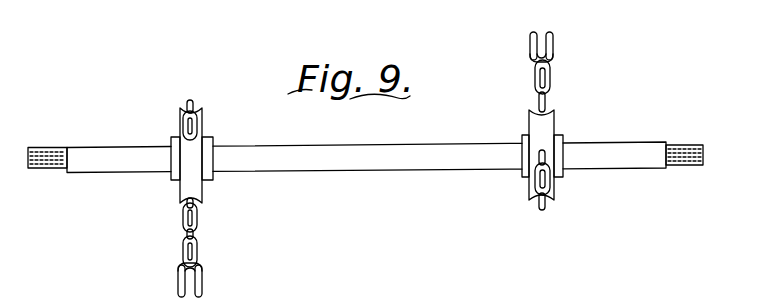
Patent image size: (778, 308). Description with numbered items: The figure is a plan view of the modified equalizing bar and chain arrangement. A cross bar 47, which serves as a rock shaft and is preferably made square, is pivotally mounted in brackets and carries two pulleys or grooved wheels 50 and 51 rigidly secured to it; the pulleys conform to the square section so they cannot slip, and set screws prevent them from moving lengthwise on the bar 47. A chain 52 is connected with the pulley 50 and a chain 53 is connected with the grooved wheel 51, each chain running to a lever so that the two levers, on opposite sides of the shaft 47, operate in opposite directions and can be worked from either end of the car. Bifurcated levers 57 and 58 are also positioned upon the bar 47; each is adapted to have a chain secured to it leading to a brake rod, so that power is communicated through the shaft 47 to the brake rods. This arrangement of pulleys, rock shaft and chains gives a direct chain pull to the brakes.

The cross bar 47 is at (292, 163).
The pulley or grooved wheel 50 is at (205, 193).
The pulley or grooved wheel 51 is at (560, 190).
The chain 52 is at (187, 245).
The chain 53 is at (552, 78).
The bifurcated lever 57 is at (175, 180).
The bifurcated lever 58 is at (524, 138).